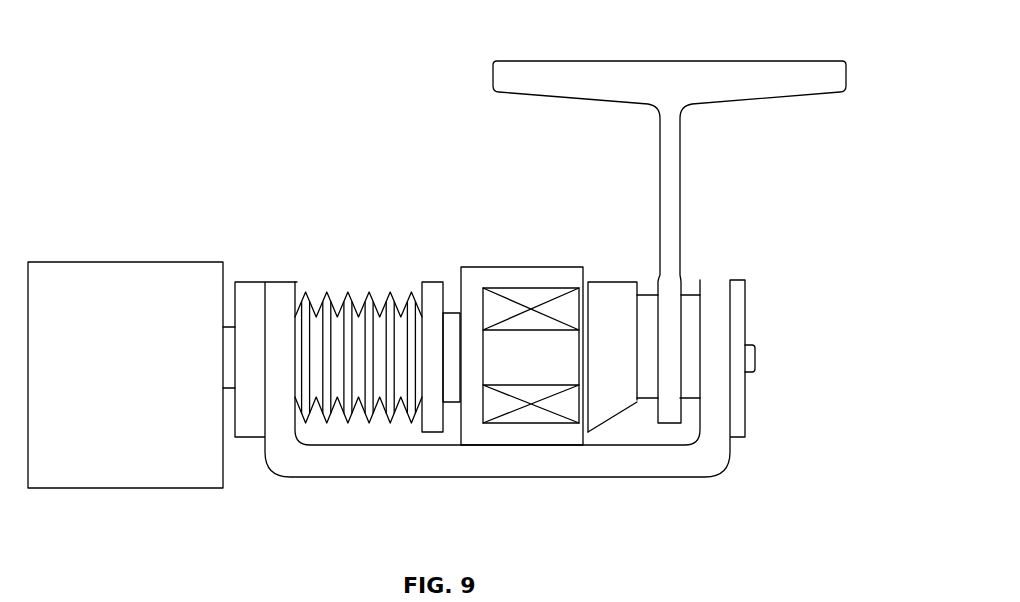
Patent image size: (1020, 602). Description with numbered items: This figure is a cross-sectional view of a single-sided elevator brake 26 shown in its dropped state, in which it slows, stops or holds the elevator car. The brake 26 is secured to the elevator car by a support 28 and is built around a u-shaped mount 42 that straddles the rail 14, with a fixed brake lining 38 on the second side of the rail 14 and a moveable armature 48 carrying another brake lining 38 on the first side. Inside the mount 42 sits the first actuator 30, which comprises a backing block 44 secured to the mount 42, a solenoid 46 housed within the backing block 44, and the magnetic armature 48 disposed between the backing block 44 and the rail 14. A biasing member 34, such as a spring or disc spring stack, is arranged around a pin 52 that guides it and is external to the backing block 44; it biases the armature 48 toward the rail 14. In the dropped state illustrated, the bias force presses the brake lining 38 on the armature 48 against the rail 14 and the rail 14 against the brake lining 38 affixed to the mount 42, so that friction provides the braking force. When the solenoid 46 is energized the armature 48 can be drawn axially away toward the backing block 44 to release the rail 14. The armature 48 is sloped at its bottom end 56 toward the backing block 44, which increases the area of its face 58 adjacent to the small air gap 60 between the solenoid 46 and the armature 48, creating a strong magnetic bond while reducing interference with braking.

The rail 14 is at (718, 72).
The brake 26 is at (114, 138).
The support 28 is at (107, 285).
The first actuator 30 is at (549, 305).
The biasing member 34 is at (348, 288).
The brake lining 38 is at (645, 388).
The mount 42 is at (352, 465).
The backing block 44 is at (497, 273).
The solenoid 46 is at (560, 313).
The armature 48 is at (602, 287).
The pin 52 is at (453, 387).
The bottom end 56 is at (620, 402).
The face 58 is at (588, 385).
The air gap 60 is at (587, 432).